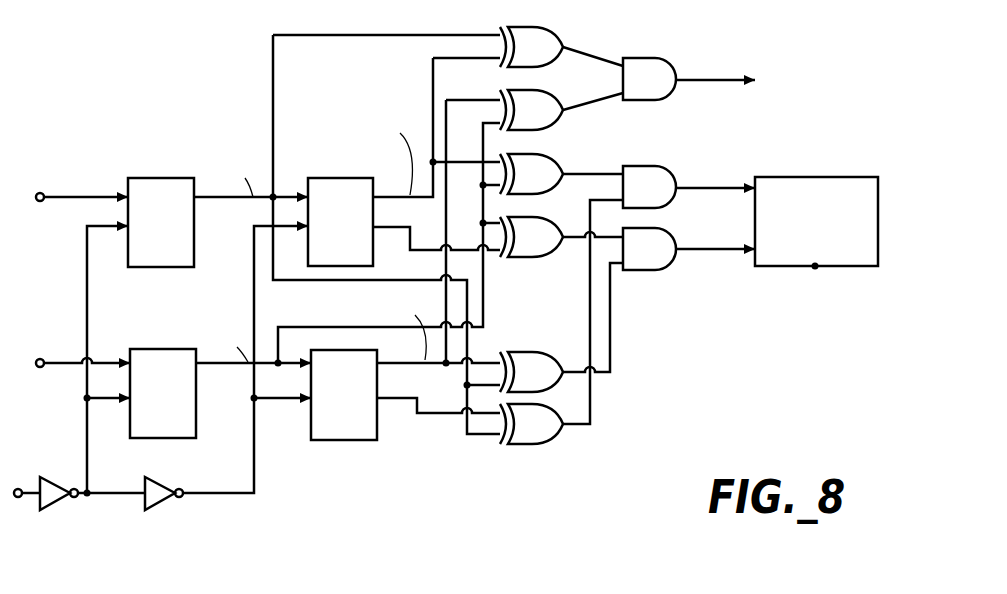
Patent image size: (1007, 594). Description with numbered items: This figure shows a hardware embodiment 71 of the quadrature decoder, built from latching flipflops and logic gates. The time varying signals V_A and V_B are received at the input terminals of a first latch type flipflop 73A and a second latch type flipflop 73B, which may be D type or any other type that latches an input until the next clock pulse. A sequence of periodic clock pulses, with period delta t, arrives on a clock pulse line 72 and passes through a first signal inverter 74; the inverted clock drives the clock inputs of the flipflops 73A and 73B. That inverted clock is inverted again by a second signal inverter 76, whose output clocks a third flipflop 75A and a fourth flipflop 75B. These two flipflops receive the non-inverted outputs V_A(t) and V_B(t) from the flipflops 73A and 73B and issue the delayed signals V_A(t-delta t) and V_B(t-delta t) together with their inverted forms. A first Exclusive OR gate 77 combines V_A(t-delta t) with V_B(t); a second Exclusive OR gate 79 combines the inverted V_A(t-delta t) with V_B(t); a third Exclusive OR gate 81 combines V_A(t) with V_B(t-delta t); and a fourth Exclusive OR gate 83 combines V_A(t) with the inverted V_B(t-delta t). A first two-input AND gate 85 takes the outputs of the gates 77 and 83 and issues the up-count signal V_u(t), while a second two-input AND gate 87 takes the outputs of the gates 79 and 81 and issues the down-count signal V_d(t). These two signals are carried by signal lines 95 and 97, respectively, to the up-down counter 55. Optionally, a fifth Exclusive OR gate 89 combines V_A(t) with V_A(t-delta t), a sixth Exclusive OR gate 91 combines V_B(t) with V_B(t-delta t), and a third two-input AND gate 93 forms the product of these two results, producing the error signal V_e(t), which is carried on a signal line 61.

The hardware embodiment 71 is at (150, 92).
The clock pulse line 72 is at (28, 497).
The first latch type flipflop 73A is at (165, 178).
The second latch type flipflop 73B is at (167, 349).
The first signal inverter 74 is at (62, 474).
The third flipflop 75A is at (341, 180).
The fourth flipflop 75B is at (352, 441).
The second signal inverter 76 is at (164, 477).
The first Exclusive OR gate 77 is at (548, 154).
The second Exclusive OR gate 79 is at (527, 258).
The third Exclusive OR gate 81 is at (522, 352).
The fourth Exclusive OR gate 83 is at (548, 442).
The first two-input AND gate 85 is at (660, 165).
The second two-input AND gate 87 is at (663, 268).
The fifth Exclusive OR gate 89 is at (548, 27).
The sixth Exclusive OR gate 91 is at (548, 90).
The third two-input AND gate 93 is at (667, 58).
The signal line 95 is at (733, 185).
The signal line 97 is at (718, 252).
The up-down counter 55 is at (790, 267).
The signal line 61 is at (697, 82).